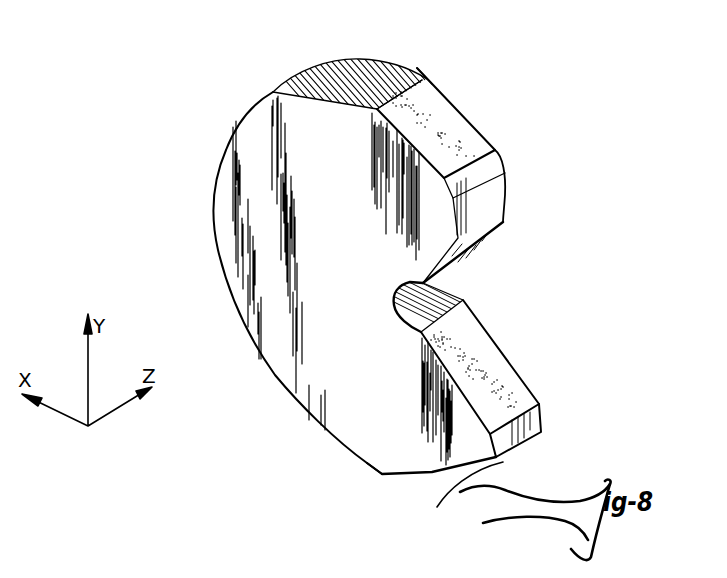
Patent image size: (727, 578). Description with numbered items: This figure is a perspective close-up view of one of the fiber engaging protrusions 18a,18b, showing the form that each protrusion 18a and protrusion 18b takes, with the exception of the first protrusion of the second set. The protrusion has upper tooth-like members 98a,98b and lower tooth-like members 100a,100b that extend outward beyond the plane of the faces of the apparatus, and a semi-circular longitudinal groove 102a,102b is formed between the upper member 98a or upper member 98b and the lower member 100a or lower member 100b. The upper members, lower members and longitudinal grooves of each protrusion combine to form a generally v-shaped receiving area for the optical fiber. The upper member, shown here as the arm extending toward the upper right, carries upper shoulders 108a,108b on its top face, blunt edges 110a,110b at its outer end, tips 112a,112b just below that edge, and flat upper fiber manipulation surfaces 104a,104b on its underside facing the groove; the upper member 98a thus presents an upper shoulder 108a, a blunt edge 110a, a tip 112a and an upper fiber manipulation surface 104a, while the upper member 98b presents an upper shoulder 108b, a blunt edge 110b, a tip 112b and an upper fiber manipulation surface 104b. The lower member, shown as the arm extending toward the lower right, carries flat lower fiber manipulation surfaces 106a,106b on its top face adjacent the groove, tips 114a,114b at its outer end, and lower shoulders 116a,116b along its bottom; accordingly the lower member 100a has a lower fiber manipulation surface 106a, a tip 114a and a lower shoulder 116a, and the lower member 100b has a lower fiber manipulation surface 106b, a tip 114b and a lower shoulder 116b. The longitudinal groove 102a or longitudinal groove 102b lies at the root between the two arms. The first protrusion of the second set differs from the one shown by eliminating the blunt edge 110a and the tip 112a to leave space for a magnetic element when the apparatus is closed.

The fiber engaging protrusions 18a,18b is at (394, 248).
The fiber engaging protrusion 18a is at (394, 248).
The fiber engaging protrusion 18b is at (443, 56).
The upper tooth-like members 98a,98b is at (485, 70).
The upper tooth-like member 98a is at (485, 70).
The upper tooth-like member 98b is at (437, 87).
The upper shoulders 108a,108b is at (501, 123).
The upper shoulder 108a is at (501, 123).
The upper shoulder 108b is at (455, 125).
The blunt edges 110a,110b is at (542, 186).
The blunt edge 110a is at (542, 186).
The blunt edge 110b is at (500, 161).
The tips 112a,112b is at (546, 224).
The tip 112a is at (546, 224).
The tip 112b is at (496, 202).
The upper fiber manipulation surfaces 104a,104b is at (540, 252).
The upper fiber manipulation surface 104a is at (540, 252).
The upper fiber manipulation surface 104b is at (480, 241).
The semi-circular longitudinal grooves 102a,102b is at (488, 302).
The semi-circular longitudinal groove 102a is at (488, 302).
The semi-circular longitudinal groove 102b is at (464, 300).
The lower fiber manipulation surfaces 106a,106b is at (561, 367).
The lower fiber manipulation surface 106a is at (561, 367).
The lower fiber manipulation surface 106b is at (514, 380).
The tips 114a,114b is at (590, 424).
The tip 114a is at (590, 424).
The tip 114b is at (533, 420).
The lower shoulders 116a,116b is at (390, 501).
The lower shoulder 116a is at (390, 501).
The lower shoulder 116b is at (412, 477).
The lower tooth-like members 100a,100b is at (311, 492).
The lower tooth-like member 100a is at (311, 492).
The lower tooth-like member 100b is at (377, 480).